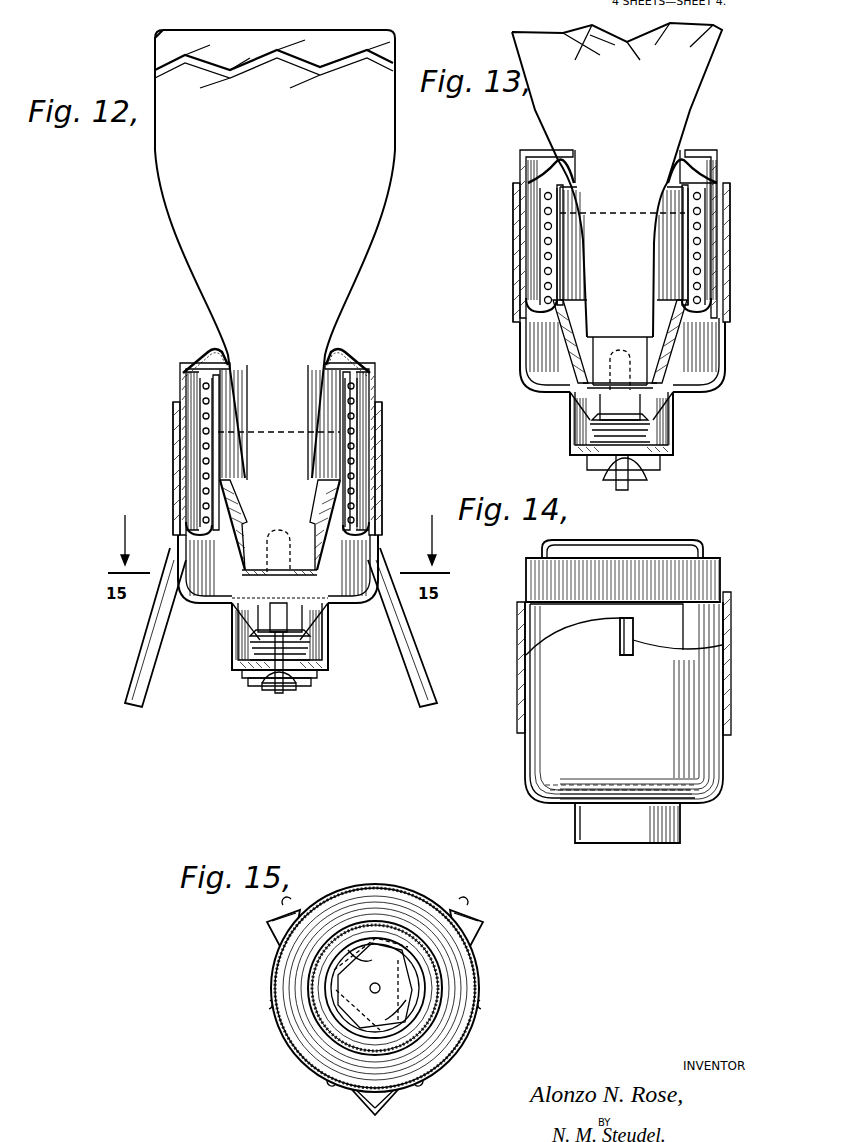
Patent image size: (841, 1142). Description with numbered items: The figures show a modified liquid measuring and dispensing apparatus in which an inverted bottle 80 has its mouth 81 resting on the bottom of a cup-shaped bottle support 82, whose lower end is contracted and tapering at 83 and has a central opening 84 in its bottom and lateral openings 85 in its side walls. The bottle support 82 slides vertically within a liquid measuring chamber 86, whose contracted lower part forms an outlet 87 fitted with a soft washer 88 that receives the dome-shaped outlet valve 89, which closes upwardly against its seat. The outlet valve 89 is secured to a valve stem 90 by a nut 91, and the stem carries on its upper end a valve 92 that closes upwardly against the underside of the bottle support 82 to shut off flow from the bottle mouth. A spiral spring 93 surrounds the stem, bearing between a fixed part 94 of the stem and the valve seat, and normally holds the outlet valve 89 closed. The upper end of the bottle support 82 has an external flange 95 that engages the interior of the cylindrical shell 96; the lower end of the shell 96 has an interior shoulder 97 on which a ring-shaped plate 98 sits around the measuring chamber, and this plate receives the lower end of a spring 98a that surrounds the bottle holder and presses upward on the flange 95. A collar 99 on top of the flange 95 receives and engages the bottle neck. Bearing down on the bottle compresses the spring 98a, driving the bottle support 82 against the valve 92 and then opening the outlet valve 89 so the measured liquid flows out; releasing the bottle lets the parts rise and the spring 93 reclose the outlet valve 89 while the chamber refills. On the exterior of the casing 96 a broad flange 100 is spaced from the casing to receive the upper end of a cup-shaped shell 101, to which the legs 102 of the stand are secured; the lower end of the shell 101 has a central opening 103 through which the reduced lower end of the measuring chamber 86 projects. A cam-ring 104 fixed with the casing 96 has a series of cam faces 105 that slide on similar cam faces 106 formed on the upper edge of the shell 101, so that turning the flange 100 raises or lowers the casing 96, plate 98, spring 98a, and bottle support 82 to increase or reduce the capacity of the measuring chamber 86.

In FIG. 12, the inverted bottle 80 is at (190, 248).
In FIG. 13, the inverted bottle 80 is at (565, 100).
In FIG. 12, the bottle mouth 81 is at (243, 560).
In FIG. 13, the bottle mouth 81 is at (560, 380).
In FIG. 12, the cup-shaped bottle support 82 is at (208, 420).
In FIG. 13, the cup-shaped bottle support 82 is at (555, 203).
In FIG. 12, the tapering contracted lower end 83 is at (355, 503).
In FIG. 13, the tapering contracted lower end 83 is at (620, 341).
In FIG. 12, the central opening 84 is at (305, 615).
In FIG. 13, the central opening 84 is at (665, 385).
In FIG. 12, the lateral openings 85 is at (282, 525).
In FIG. 13, the lateral openings 85 is at (570, 365).
In FIG. 12, the liquid measuring chamber 86 is at (215, 585).
In FIG. 13, the liquid measuring chamber 86 is at (700, 350).
In FIG. 14, the liquid measuring chamber 86 is at (545, 805).
In FIG. 15, the liquid measuring chamber 86 is at (315, 1012).
In FIG. 12, the outlet 87 is at (250, 685).
In FIG. 13, the outlet 87 is at (655, 465).
In FIG. 12, the washer 88 is at (245, 672).
In FIG. 12, the outlet valve 89 is at (297, 684).
In FIG. 13, the outlet valve 89 is at (603, 470).
In FIG. 12, the valve stem 90 is at (280, 695).
In FIG. 13, the valve stem 90 is at (630, 483).
In FIG. 15, the valve stem 90 is at (382, 989).
In FIG. 12, the nut 91 is at (265, 685).
In FIG. 12, the valve 92 is at (325, 640).
In FIG. 13, the valve 92 is at (580, 400).
In FIG. 15, the valve 92 is at (395, 977).
In FIG. 12, the spiral spring 93 is at (328, 660).
In FIG. 13, the spiral spring 93 is at (655, 428).
In FIG. 12, the fixed part of the valve stem 94 is at (268, 628).
In FIG. 13, the fixed part of the valve stem 94 is at (605, 430).
In FIG. 12, the external flange 95 is at (378, 378).
In FIG. 13, the external flange 95 is at (690, 165).
In FIG. 12, the cylindrical shell 96 is at (180, 368).
In FIG. 13, the cylindrical shell 96 is at (716, 165).
In FIG. 14, the cylindrical shell 96 is at (722, 578).
In FIG. 12, the shoulder 97 is at (195, 530).
In FIG. 13, the shoulder 97 is at (700, 320).
In FIG. 12, the ring-shaped plate 98 is at (182, 505).
In FIG. 13, the ring-shaped plate 98 is at (700, 300).
In FIG. 12, the spring 98a is at (205, 405).
In FIG. 13, the spring 98a is at (545, 240).
In FIG. 12, the collar 99 is at (345, 348).
In FIG. 13, the collar 99 is at (555, 162).
In FIG. 14, the collar 99 is at (690, 548).
In FIG. 12, the broad flange 100 is at (384, 455).
In FIG. 13, the broad flange 100 is at (729, 258).
In FIG. 14, the broad flange 100 is at (518, 677).
In FIG. 12, the cup-shaped shell 101 is at (197, 555).
In FIG. 14, the cup-shaped shell 101 is at (527, 775).
In FIG. 12, the legs 102 is at (130, 695).
In FIG. 15, the legs 102 is at (265, 925).
In FIG. 12, the central opening 103 is at (338, 620).
In FIG. 13, the central opening 103 is at (570, 395).
In FIG. 12, the cam-ring 104 is at (385, 413).
In FIG. 13, the cam-ring 104 is at (726, 197).
In FIG. 14, the cam-ring 104 is at (615, 600).
In FIG. 14, the cam faces 105 is at (568, 625).
In FIG. 14, the cam faces 106 is at (655, 652).
In FIG. 15, the cam faces 106 is at (275, 1003).